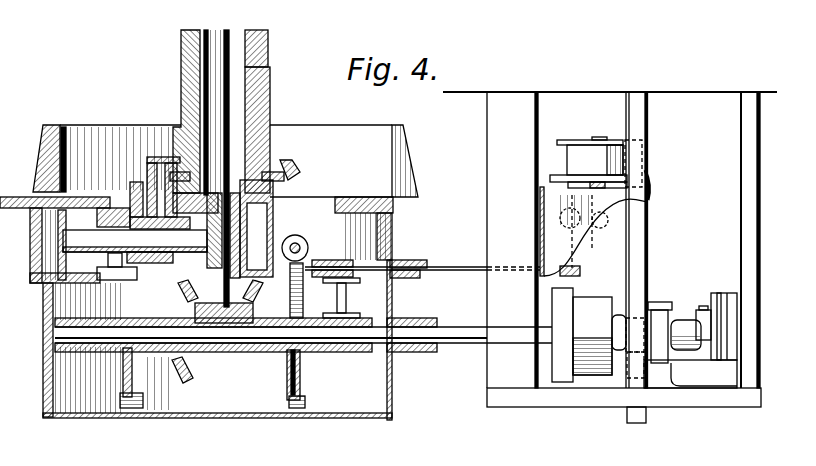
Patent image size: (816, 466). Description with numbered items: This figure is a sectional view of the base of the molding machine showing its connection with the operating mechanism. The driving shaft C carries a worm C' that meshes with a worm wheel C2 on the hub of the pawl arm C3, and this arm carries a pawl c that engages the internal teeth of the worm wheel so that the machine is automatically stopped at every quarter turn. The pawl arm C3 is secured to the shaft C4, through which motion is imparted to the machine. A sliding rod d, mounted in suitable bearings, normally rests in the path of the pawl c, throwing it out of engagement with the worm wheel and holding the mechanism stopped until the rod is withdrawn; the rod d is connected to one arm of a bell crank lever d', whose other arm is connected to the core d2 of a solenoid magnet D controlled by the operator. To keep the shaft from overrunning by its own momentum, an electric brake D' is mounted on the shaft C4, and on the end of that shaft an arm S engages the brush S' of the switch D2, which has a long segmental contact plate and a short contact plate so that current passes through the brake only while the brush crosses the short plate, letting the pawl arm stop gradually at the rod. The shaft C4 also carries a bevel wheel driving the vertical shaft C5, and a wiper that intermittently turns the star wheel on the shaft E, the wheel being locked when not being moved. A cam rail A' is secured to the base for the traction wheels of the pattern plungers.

The cam rail A' is at (214, 272).
The driving shaft C is at (284, 228).
The worm C' is at (223, 286).
The worm wheel C2 is at (170, 264).
The pawl arm C3 is at (301, 360).
The shaft C4 is at (230, 340).
The vertical shaft C5 is at (221, 168).
The pawl c is at (123, 380).
The shaft E is at (135, 241).
The sliding rod d is at (422, 261).
The bell crank lever d' is at (594, 223).
The core d2 is at (597, 182).
The solenoid magnet D is at (595, 162).
The electric brake D' is at (598, 335).
The switch D2 is at (731, 300).
The arm S is at (690, 341).
The brush S' is at (701, 316).